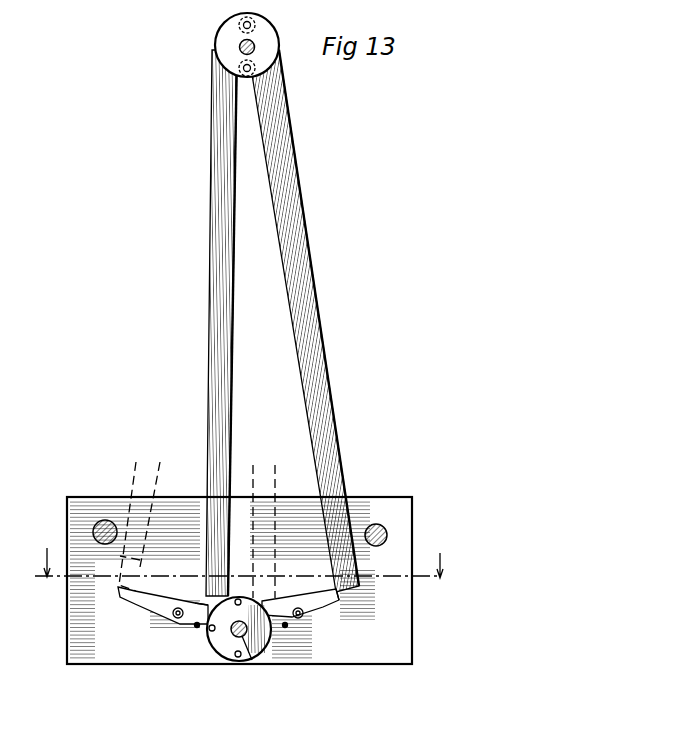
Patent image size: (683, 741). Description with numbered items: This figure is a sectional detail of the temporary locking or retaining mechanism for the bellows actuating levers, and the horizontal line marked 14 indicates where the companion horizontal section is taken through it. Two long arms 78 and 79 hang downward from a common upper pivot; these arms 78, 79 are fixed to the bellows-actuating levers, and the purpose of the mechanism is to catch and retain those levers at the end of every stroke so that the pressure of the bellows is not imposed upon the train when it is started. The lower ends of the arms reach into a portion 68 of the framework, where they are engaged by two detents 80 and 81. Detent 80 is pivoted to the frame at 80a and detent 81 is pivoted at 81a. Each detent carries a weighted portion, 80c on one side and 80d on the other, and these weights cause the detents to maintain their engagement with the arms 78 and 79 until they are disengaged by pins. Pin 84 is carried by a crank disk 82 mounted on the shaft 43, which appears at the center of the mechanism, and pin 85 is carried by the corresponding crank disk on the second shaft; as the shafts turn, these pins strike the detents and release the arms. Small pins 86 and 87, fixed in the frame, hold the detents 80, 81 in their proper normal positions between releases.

The section line 14- 14 is at (249, 560).
The shaft 43 is at (252, 664).
The portion of the framework 68 is at (378, 505).
The arm 78 is at (318, 392).
The arm 79 is at (222, 400).
The detent 80 is at (328, 608).
The pivot 80a is at (305, 630).
The weighted portion 80c is at (287, 603).
The weighted portion 80d is at (188, 603).
The detent 81 is at (165, 625).
The pivot 81a is at (178, 630).
The crank disk 82 is at (232, 660).
The pin 84 is at (250, 655).
The pin 85 is at (196, 663).
The small pin 86 is at (195, 630).
The small pin 87 is at (290, 628).